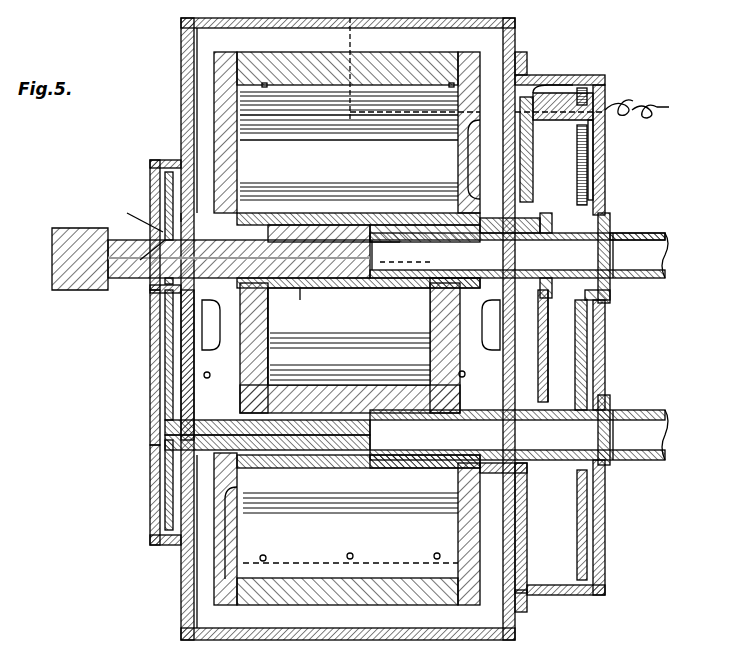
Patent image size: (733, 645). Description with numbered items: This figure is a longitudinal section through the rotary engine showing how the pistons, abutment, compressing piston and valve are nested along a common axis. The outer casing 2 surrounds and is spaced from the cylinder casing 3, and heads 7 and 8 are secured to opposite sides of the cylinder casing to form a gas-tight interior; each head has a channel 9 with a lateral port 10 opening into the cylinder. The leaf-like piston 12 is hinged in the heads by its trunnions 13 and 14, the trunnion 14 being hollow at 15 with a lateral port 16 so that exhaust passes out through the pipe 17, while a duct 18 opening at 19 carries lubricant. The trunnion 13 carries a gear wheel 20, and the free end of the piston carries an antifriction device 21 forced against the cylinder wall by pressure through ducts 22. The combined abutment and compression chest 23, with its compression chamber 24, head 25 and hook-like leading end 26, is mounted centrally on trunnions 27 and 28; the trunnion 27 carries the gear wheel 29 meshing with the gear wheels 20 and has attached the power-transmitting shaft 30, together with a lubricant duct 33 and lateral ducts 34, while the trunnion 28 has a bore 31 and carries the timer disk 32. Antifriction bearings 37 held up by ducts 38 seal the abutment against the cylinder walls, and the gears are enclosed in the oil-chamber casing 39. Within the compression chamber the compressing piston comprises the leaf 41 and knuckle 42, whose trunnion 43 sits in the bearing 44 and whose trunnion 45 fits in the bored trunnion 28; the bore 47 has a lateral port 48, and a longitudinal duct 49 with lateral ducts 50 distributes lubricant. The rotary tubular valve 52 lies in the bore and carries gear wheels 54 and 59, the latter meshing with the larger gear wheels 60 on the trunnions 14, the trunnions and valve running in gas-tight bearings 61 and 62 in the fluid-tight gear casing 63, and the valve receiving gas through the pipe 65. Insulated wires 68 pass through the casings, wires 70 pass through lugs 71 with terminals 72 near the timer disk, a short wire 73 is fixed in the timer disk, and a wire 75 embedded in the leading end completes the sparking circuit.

The outer casing 2 is at (181, 50).
The cylinder casing 3 is at (300, 65).
The head 7 is at (214, 101).
The head 8 is at (470, 90).
The channel 9 is at (204, 376).
The lateral port 10 is at (165, 417).
The piston 12 is at (349, 327).
The trunnion 13 is at (300, 430).
The trunnion 14 is at (524, 470).
The hollow portion 15 is at (517, 435).
The lateral port 16 is at (408, 462).
The pipe 17 is at (668, 453).
The duct 18 is at (262, 468).
The opening 19 is at (318, 462).
The gear wheel 20 is at (165, 475).
The antifriction device 21 is at (284, 128).
The duct 22 is at (347, 556).
The abutment and compression chest 23 is at (150, 327).
The compression chamber 24 is at (165, 362).
The head 25 is at (550, 330).
The leading end 26 is at (245, 120).
The trunnion 27 is at (140, 260).
The trunnion 28 is at (555, 210).
The gear wheel 29 is at (165, 185).
The power-transmitting shaft 30 is at (60, 268).
The longitudinal channel 31 is at (428, 285).
The timer disk 32 is at (587, 146).
The duct 33 is at (122, 265).
The lateral duct 34 is at (150, 213).
The antifriction bearing 37 is at (545, 88).
The duct 38 is at (264, 83).
The casing 39 is at (181, 400).
The leaf 41 is at (350, 350).
The knuckle 42 is at (345, 283).
The trunnion 43 is at (303, 300).
The bearing 44 is at (272, 290).
The trunnion 45 is at (587, 318).
The bore 47 is at (390, 270).
The lateral port 48 is at (400, 225).
The longitudinal duct 49 is at (316, 180).
The lateral duct 50 is at (340, 205).
The rotary tubular valve 52 is at (519, 255).
The gear wheel 54 is at (560, 215).
The gear wheel 59 is at (612, 294).
The gear wheel 60 is at (605, 160).
The bearing 61 is at (612, 405).
The bearing 62 is at (615, 225).
The casing 63 is at (605, 552).
The pipe 65 is at (665, 268).
The insulated wire 68 is at (351, 44).
The insulated wire 70 is at (650, 113).
The lug 71 is at (600, 100).
The terminal 72 is at (560, 105).
The insulated wire 73 is at (550, 100).
The insulated wire 75 is at (398, 116).